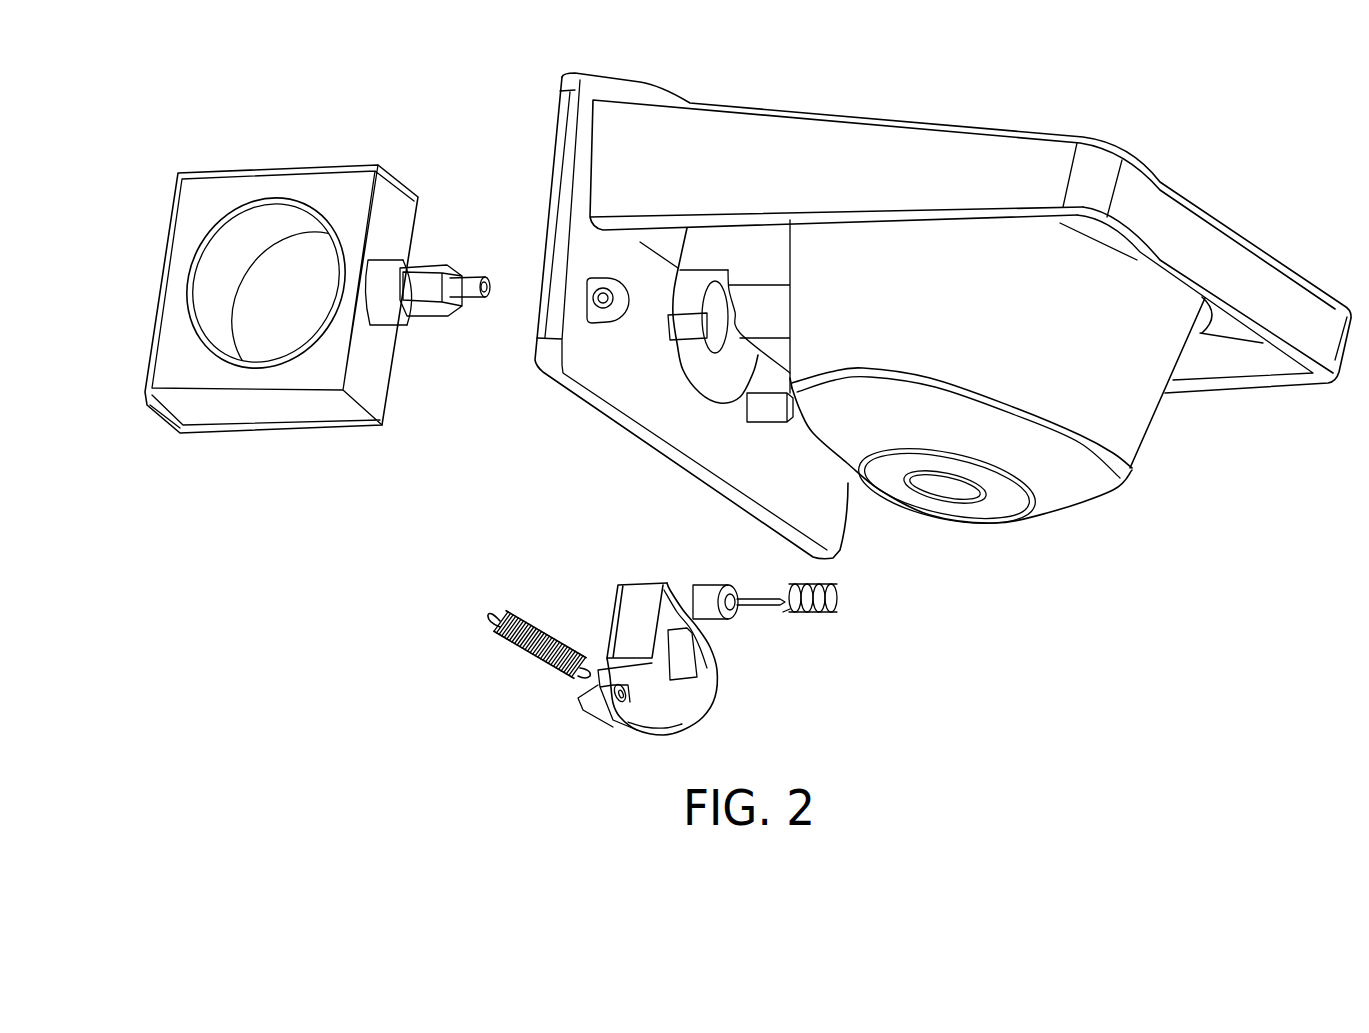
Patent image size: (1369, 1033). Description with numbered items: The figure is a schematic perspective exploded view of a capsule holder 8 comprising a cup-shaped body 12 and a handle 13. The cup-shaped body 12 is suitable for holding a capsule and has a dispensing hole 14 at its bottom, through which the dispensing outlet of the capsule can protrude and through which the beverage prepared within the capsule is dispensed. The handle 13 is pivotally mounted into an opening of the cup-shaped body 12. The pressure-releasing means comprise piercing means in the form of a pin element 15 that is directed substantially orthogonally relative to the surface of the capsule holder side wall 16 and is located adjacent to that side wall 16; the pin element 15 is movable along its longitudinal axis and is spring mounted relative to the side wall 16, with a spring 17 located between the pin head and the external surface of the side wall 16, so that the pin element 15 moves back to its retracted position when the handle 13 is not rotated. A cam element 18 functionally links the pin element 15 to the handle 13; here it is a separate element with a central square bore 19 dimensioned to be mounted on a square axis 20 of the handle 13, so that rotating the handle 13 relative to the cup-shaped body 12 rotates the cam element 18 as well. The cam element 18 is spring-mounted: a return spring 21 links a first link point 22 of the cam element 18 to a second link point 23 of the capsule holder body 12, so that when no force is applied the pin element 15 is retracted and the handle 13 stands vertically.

The camera mounting assembly 8 is at (942, 350).
The cup-shaped body 12 is at (942, 316).
The handle 13 is at (188, 207).
The dispensing hole 14 is at (940, 487).
The pin element 15 is at (715, 582).
The side wall 16 is at (1001, 421).
The spring 17 is at (817, 613).
The cam element 18 is at (671, 644).
The central square bore 19 is at (685, 668).
The square axis 20 is at (432, 264).
The return spring 21 is at (540, 663).
The first link point 22 is at (627, 693).
The second link point 23 is at (605, 307).